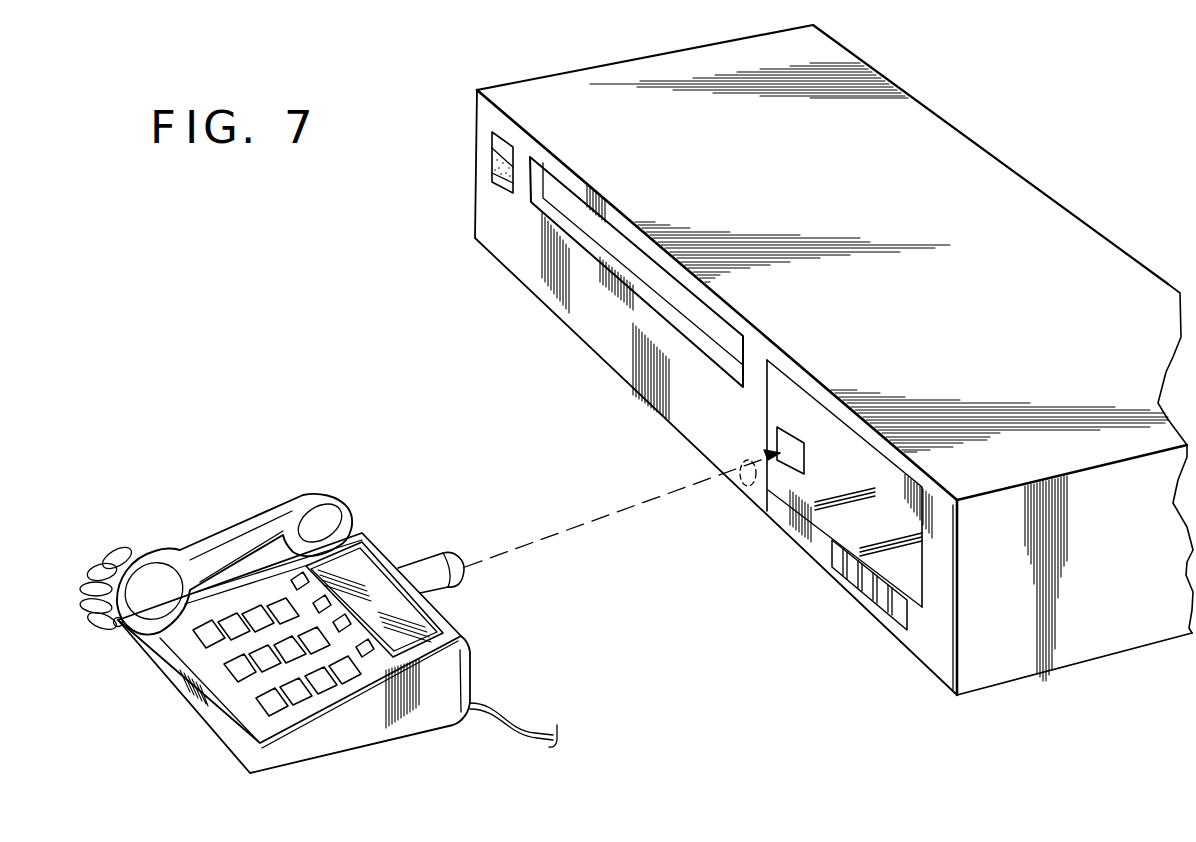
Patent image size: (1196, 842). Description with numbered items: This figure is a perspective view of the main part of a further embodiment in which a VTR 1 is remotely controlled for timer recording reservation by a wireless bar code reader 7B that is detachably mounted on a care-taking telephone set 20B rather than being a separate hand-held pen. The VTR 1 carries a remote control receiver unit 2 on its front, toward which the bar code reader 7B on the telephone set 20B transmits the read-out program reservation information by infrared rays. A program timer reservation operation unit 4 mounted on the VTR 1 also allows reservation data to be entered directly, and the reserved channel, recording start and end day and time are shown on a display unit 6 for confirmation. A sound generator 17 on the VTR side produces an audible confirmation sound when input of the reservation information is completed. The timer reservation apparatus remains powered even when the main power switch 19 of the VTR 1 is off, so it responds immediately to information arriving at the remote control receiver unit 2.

The VTR 1 is at (577, 83).
The main power switch 19 is at (492, 156).
The remote control receiver unit 2 is at (788, 430).
The sound generator 17 is at (742, 478).
The program timer reservation operation unit 4 is at (860, 580).
The display unit 6 is at (916, 570).
The bar code reader 7B is at (436, 562).
The care-taking telephone set 20B is at (462, 668).